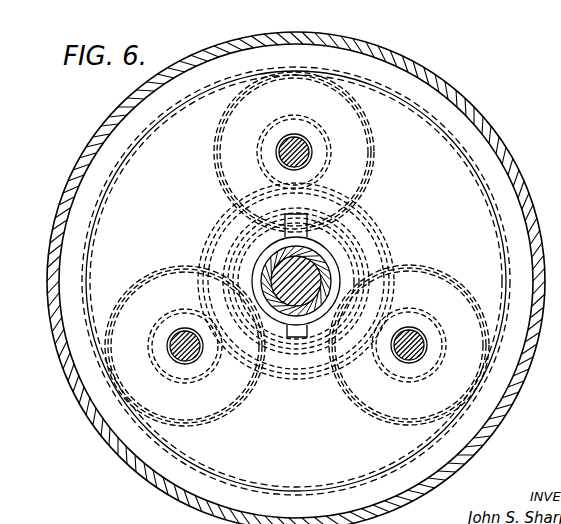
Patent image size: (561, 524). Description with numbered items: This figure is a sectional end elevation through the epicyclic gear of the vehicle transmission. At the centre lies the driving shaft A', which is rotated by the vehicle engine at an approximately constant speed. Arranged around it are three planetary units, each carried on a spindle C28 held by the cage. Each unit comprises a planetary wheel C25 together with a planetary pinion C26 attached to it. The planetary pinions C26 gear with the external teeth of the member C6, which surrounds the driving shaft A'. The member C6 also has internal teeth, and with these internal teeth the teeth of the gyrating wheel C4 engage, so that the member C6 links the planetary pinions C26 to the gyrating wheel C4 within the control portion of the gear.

The spindle C28 is at (306, 155).
The planetary pinion C26 is at (258, 160).
The planetary wheel C25 is at (368, 189).
The driving shaft A' is at (296, 338).
The gyrating wheel C4 is at (320, 333).
The member C6 is at (283, 356).